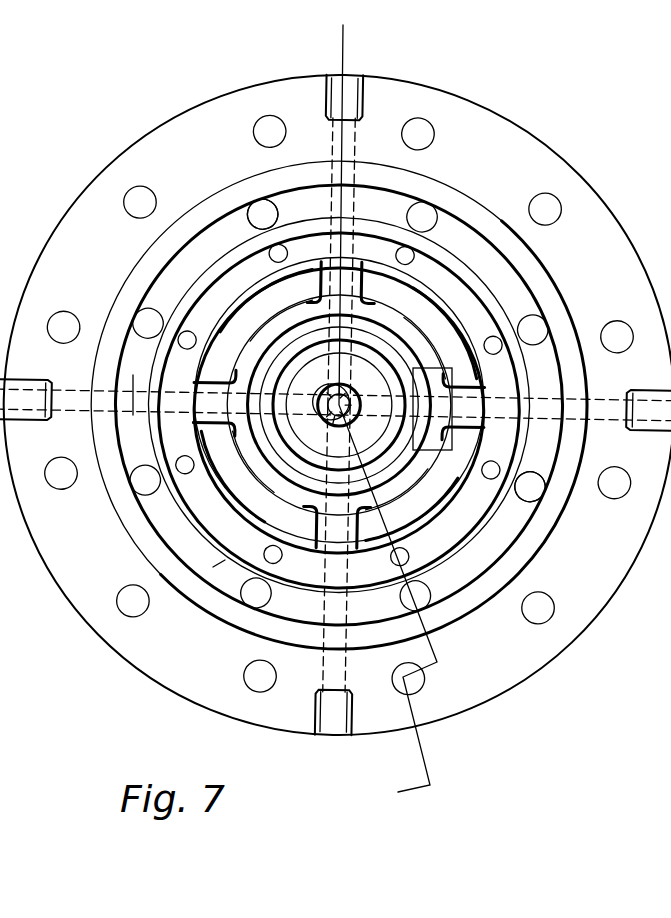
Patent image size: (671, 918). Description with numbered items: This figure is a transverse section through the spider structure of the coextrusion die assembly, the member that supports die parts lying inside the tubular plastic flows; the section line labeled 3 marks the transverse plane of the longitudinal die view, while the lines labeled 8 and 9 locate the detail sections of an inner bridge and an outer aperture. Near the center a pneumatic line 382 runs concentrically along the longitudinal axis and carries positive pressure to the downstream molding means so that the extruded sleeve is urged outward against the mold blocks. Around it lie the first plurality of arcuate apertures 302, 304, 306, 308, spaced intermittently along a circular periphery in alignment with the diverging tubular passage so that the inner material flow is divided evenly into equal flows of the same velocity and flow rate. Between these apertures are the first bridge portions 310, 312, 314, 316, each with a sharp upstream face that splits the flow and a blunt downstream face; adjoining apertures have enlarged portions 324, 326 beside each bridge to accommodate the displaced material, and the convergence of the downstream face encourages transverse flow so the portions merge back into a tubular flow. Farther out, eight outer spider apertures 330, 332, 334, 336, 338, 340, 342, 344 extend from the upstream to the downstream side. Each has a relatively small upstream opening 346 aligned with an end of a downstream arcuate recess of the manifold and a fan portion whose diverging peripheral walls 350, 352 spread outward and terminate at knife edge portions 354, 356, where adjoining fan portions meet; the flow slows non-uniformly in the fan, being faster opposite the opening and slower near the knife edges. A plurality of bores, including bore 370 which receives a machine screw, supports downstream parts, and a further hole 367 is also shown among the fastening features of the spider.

The first spider aperture 302 is at (247, 321).
The first spider aperture 304 is at (428, 324).
The first spider aperture 306 is at (429, 492).
The first spider aperture 308 is at (262, 506).
The first bridge portion 310 is at (353, 282).
The first bridge portion 312 is at (490, 426).
The first bridge portion 314 is at (319, 573).
The first bridge portion 316 is at (344, 412).
The enlarged portion 324 is at (572, 384).
The enlarged portion 326 is at (536, 462).
The outer spider aperture 330 is at (174, 278).
The outer spider aperture 332 is at (240, 226).
The outer spider aperture 334 is at (466, 230).
The outer spider aperture 336 is at (514, 290).
The outer spider aperture 338 is at (532, 500).
The outer spider aperture 340 is at (444, 580).
The outer spider aperture 342 is at (230, 580).
The outer spider aperture 344 is at (156, 516).
The upstream opening 346 is at (134, 486).
The diverging peripheral wall 350 is at (167, 530).
The diverging peripheral wall 352 is at (128, 430).
The knife edge portion 354 is at (200, 538).
The knife edge portion 356 is at (130, 394).
The outer bolt hole 367 is at (399, 683).
The bore 370 is at (399, 560).
The pneumatic line 382 is at (336, 397).
The section line 3- 3 is at (343, 25).
The section line 8- 8 is at (412, 367).
The section line 9- 9 is at (133, 375).